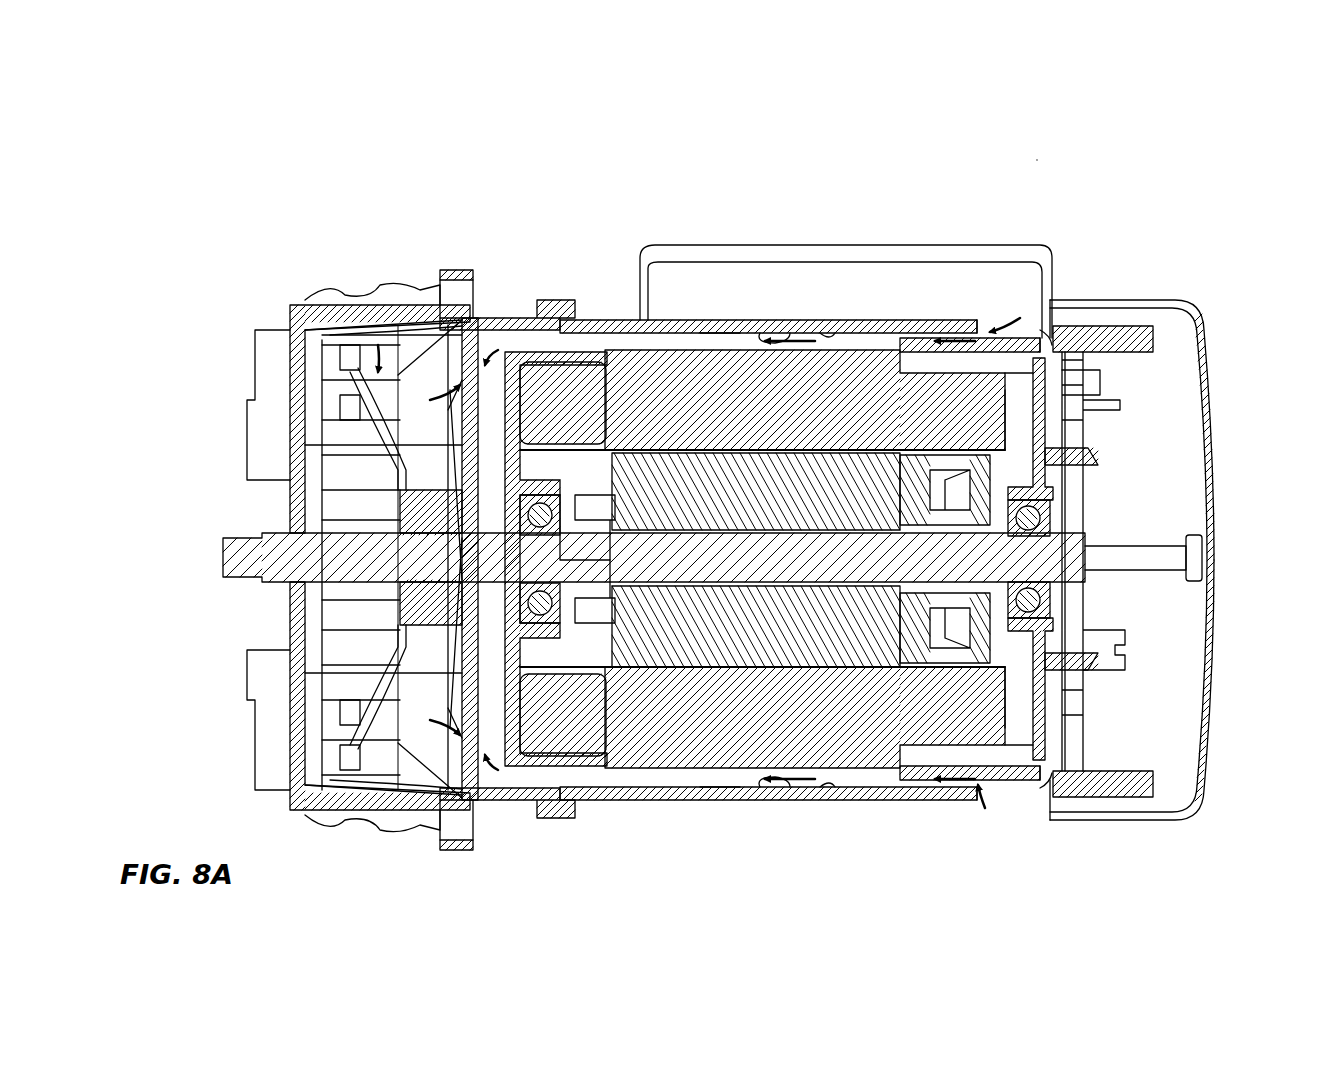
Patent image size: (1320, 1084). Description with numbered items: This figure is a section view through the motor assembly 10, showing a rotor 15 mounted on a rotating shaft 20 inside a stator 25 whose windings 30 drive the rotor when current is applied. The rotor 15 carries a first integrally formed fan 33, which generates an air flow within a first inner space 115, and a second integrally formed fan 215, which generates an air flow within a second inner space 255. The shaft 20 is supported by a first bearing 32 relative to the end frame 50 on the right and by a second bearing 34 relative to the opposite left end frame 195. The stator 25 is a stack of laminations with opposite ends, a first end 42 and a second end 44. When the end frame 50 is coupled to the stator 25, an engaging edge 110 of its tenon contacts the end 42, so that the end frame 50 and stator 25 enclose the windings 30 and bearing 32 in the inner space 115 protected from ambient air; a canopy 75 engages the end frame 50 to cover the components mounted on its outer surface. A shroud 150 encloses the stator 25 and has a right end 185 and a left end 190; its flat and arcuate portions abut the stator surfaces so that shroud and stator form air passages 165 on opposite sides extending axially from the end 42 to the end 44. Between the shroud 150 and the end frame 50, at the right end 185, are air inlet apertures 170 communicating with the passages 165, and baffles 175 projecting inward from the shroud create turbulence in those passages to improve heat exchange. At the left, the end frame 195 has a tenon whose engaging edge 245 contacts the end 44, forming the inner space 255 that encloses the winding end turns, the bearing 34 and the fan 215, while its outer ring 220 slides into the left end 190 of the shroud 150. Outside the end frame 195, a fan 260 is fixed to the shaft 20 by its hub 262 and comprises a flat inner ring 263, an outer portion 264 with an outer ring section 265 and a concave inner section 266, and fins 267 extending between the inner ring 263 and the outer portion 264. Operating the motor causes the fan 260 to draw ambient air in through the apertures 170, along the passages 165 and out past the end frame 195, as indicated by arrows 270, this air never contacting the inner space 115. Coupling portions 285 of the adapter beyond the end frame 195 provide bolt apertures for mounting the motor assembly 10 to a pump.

The motor assembly 10 is at (1037, 160).
The rotor 15 is at (662, 655).
The shaft 20 is at (246, 583).
The stator 25 is at (686, 360).
The windings 30 is at (990, 335).
The first bearing 32 is at (1052, 603).
The first integrally formed fan 33 is at (1120, 302).
The second bearing 34 is at (468, 662).
The first end 42 is at (975, 460).
The second end 44 is at (562, 345).
The end frame 50 is at (1130, 404).
The canopy 75 is at (1213, 500).
The engaging edge 110 is at (930, 380).
The first inner space 115 is at (1085, 393).
The shroud 150 is at (790, 330).
The air passages 165 is at (858, 334).
The air inlet apertures 170 is at (1040, 343).
The baffles 175 is at (770, 334).
The right end 185 is at (1000, 330).
The left end 190 is at (530, 352).
The left end frame 195 is at (466, 445).
The second integrally formed fan 215 is at (604, 370).
The outer ring 220 is at (497, 318).
The engaging edge 245 is at (588, 365).
The second inner space 255 is at (548, 765).
The fan 260 is at (328, 610).
The hub 262 is at (452, 652).
The flat inner ring 263 is at (418, 430).
The outer portion 264 is at (395, 400).
The outer ring section 265 is at (335, 822).
The concave inner section 266 is at (388, 760).
The fins 267 is at (378, 345).
The arrows 270 is at (796, 330).
The coupling portions 285 is at (268, 330).